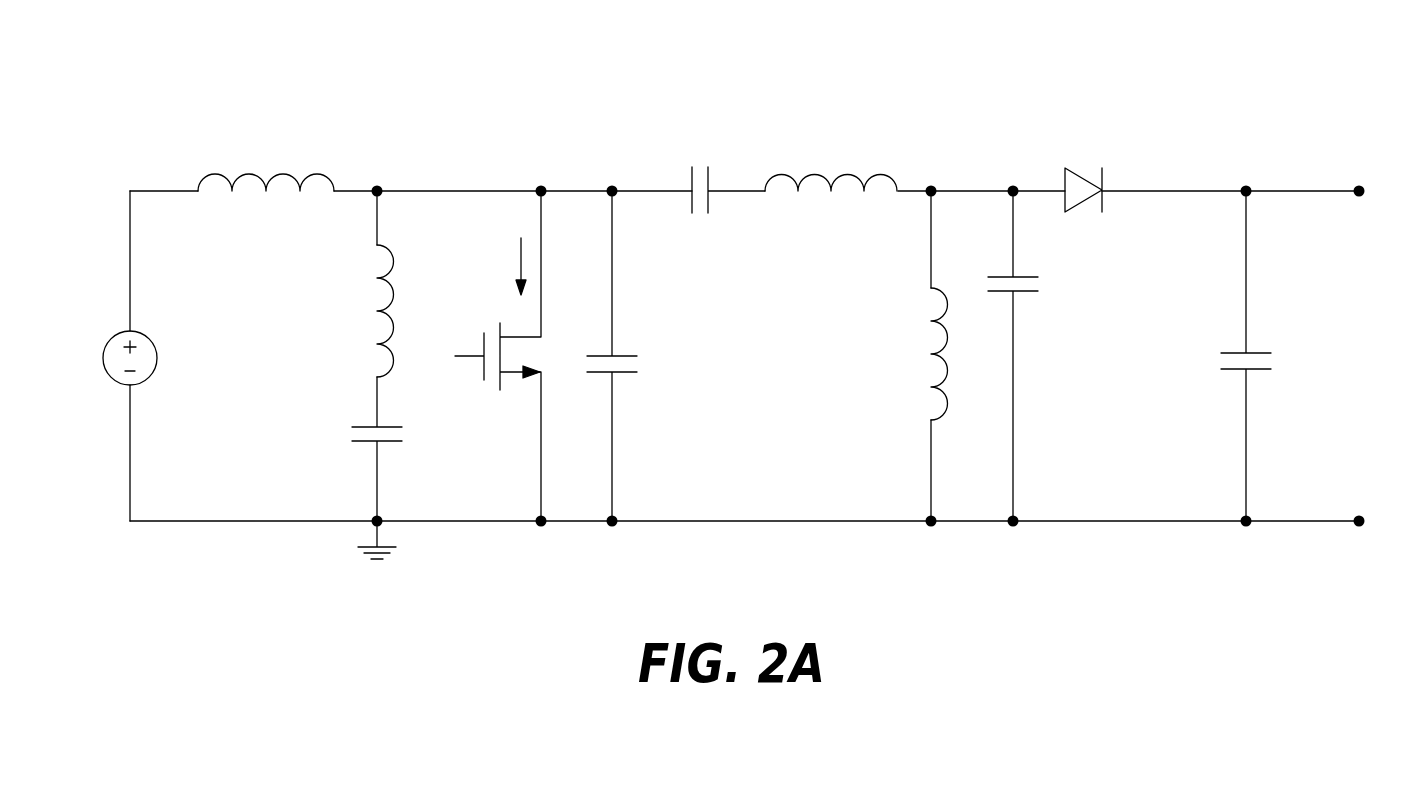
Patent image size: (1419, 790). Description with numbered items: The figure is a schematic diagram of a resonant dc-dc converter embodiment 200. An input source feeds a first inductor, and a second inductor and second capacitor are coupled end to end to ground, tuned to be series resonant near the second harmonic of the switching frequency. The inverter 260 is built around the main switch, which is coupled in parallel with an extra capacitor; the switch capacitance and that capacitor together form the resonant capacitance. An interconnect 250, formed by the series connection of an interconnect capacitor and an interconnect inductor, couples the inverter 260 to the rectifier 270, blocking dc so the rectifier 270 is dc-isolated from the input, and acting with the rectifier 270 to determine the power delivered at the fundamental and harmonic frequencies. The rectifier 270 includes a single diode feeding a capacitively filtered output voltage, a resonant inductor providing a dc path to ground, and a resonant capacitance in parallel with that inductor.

The embodiment 200 is at (912, 79).
The interconnect 250 is at (915, 205).
The inverter 260 is at (470, 249).
The rectifier 270 is at (1182, 311).